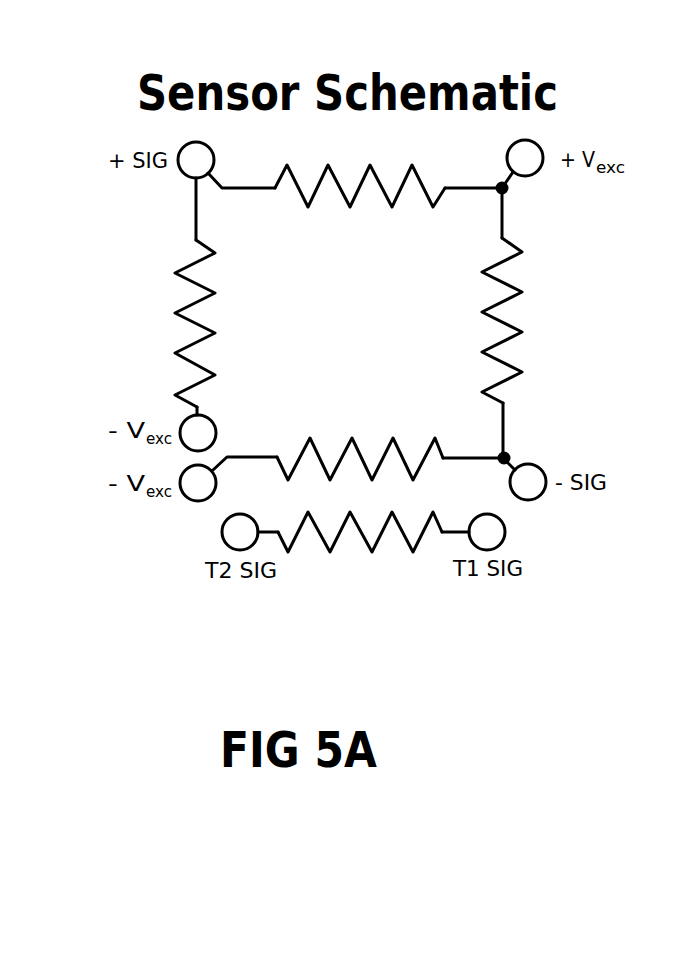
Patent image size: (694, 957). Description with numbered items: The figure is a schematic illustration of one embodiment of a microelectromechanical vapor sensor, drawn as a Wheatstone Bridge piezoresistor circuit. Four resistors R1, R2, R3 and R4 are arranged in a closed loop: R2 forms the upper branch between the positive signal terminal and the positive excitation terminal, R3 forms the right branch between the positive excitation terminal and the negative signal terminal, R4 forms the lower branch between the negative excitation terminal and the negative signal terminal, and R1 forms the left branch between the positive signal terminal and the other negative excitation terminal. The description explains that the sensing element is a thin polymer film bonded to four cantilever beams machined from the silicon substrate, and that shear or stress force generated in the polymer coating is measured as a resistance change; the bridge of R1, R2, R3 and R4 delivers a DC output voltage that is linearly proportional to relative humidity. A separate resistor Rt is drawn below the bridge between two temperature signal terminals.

The bridge resistor R1 is at (220, 323).
The bridge resistor R2 is at (360, 208).
The bridge resistor R3 is at (479, 320).
The bridge resistor R4 is at (360, 443).
The temperature sensing resistor Rt is at (360, 554).